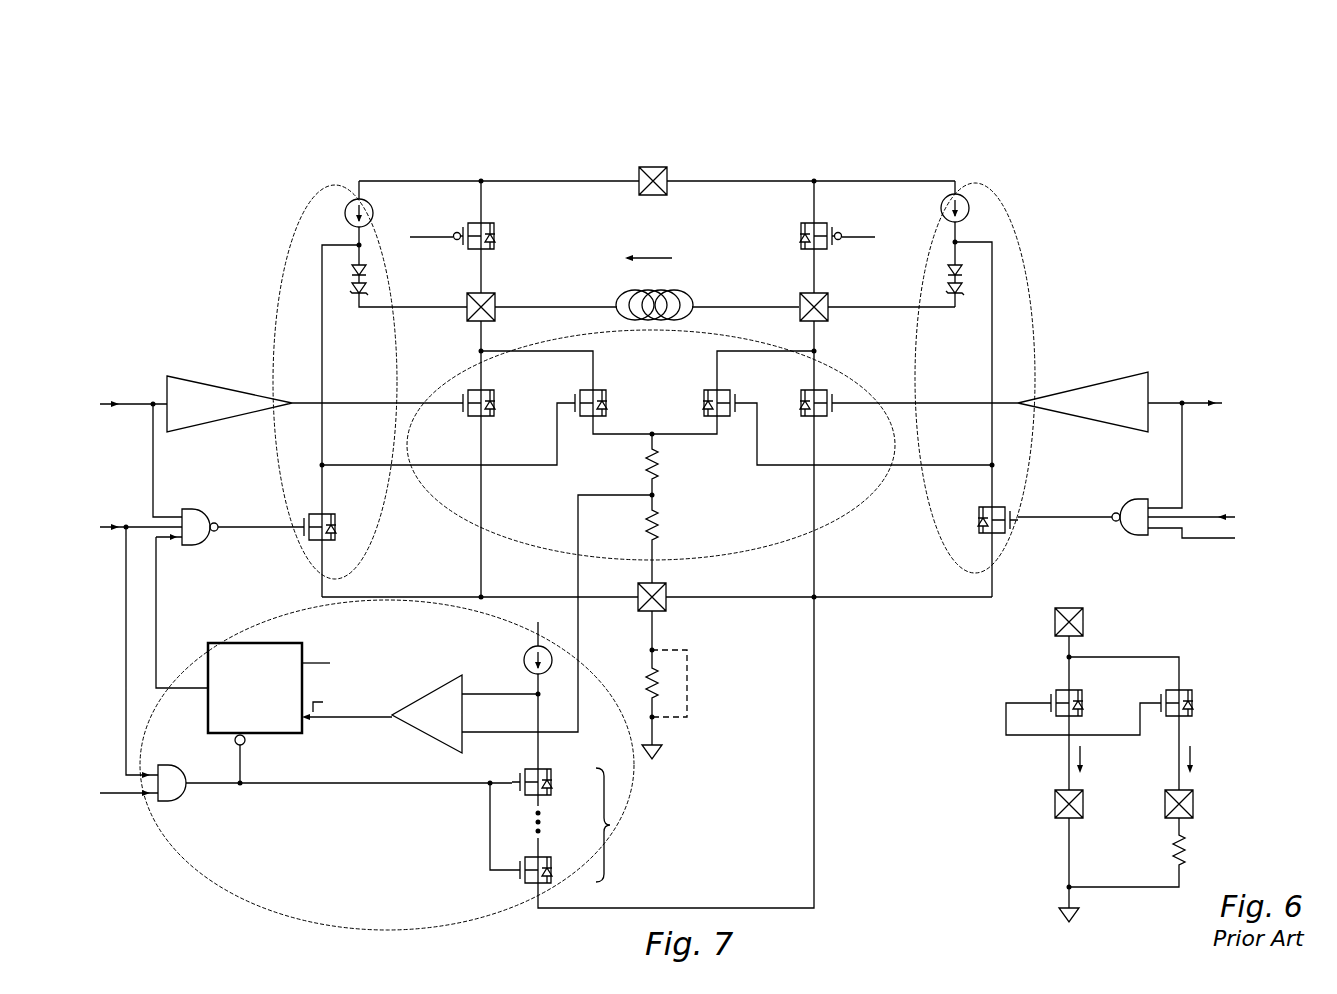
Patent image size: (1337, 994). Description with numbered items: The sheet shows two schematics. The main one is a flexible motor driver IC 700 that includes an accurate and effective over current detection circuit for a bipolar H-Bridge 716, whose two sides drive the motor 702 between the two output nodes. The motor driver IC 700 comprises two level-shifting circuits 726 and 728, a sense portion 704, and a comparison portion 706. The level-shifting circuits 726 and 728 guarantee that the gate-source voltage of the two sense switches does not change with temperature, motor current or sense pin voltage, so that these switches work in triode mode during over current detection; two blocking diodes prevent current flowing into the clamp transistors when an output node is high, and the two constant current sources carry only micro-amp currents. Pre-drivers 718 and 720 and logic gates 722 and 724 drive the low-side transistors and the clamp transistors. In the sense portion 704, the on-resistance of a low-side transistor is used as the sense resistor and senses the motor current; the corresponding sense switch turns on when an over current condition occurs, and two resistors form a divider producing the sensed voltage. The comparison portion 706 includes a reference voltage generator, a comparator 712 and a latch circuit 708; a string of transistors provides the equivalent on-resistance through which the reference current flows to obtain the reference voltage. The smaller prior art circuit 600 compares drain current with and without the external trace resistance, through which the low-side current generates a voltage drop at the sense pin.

In FIG. 7, the flexible motor driver IC 700 is at (200, 146).
In FIG. 7, the motor 702 is at (692, 304).
In FIG. 7, the sense portion 704 is at (849, 520).
In FIG. 7, the comparison portion 706 is at (466, 926).
In FIG. 7, the latch circuit 708 is at (272, 738).
In FIG. 7, the comparator 712 is at (432, 740).
In FIG. 7, the bipolar H-Bridge 716 is at (481, 141).
In FIG. 7, the pre-driver for side A low-side transistor 718 is at (212, 387).
In FIG. 7, the pre-driver for side B low-side transistor 720 is at (1098, 384).
In FIG. 7, the NAND gate side A 722 is at (188, 511).
In FIG. 7, the NAND gate side B 724 is at (1134, 502).
In FIG. 7, the level-shifting circuit 726 is at (284, 320).
In FIG. 7, the level-shifting circuit 728 is at (1028, 320).
In FIG. 6, the circuit 600 is at (985, 664).